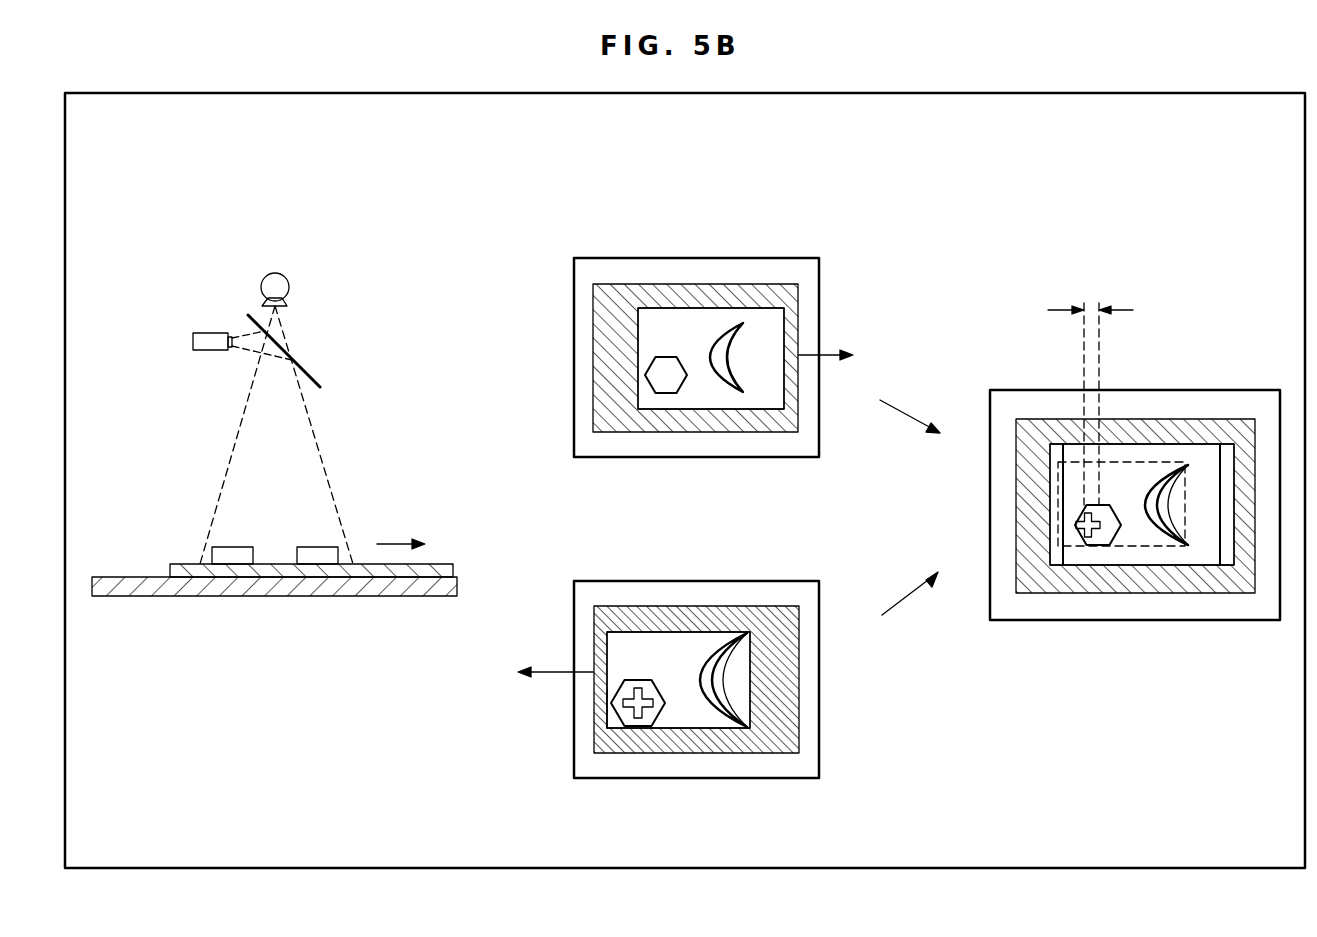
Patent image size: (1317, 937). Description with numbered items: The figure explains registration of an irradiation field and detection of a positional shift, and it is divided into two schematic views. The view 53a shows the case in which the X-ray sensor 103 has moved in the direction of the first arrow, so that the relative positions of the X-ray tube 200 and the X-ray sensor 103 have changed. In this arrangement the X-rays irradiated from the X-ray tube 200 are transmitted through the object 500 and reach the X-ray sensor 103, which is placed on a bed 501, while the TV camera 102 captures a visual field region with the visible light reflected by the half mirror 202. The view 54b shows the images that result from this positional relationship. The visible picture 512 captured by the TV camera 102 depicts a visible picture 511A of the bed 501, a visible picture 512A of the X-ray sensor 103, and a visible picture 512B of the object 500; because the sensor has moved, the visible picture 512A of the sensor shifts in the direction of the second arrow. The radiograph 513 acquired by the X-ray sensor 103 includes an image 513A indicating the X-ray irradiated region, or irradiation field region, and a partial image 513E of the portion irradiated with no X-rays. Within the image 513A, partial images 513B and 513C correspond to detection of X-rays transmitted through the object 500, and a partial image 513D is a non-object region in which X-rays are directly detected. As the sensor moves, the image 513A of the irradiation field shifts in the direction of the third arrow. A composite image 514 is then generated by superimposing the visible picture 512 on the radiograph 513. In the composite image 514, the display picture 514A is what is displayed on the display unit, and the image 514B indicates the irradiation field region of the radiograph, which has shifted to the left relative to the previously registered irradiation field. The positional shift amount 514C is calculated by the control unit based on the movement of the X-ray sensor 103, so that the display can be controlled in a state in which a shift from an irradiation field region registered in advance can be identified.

The view 53a is at (192, 208).
The view 54b is at (1032, 182).
The X-ray tube 200 is at (275, 270).
The TV camera 102 is at (193, 341).
The half mirror 202 is at (275, 341).
The X-ray sensor 103 is at (185, 565).
The object 500 is at (317, 552).
The bed 501 is at (165, 588).
The visible picture 512 is at (625, 258).
The visible picture of the bed 511A is at (693, 284).
The visible picture of the X-ray sensor 512A is at (757, 315).
The visible picture of the object 512B is at (727, 357).
The radiograph 513 is at (652, 578).
The image indicating X-ray irradiated region 513A is at (593, 708).
The partial image 513B is at (640, 722).
The partial image 513C is at (730, 713).
The partial image of non-object region 513D is at (693, 640).
The partial image irradiated with no X-rays 513E is at (792, 685).
The composite image 514 is at (1160, 390).
The display picture 514A is at (1202, 593).
The image indicating irradiation field region 514B is at (1120, 548).
The positional shift amount 514C is at (1090, 387).